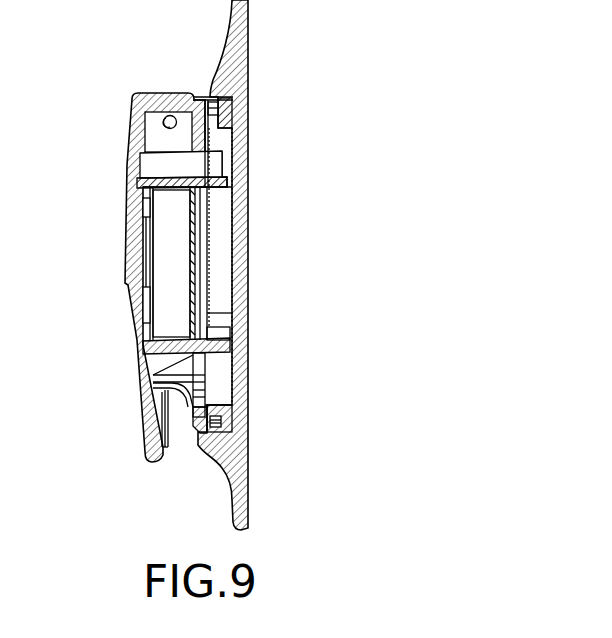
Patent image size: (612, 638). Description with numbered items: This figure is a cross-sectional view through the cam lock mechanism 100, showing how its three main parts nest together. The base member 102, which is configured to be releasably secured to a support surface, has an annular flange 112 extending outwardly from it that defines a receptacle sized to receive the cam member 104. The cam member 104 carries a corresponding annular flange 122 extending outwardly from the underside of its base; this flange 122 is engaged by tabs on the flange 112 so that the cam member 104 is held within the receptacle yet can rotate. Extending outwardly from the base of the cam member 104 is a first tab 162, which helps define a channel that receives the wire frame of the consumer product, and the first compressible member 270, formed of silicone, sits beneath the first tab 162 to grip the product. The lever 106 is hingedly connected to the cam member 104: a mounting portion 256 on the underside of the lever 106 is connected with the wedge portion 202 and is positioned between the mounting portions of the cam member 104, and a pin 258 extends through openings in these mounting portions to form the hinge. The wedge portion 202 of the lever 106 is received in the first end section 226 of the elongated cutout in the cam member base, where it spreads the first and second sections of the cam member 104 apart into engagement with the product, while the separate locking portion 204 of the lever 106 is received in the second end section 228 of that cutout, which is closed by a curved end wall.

The cam lock mechanism 100 is at (431, 100).
The base member 102 is at (243, 316).
The cam member 104 is at (202, 264).
The lever 106 is at (130, 310).
The annular flange 112 is at (209, 99).
The annular flange 122 is at (228, 417).
The first tab 162 is at (148, 237).
The wedge portion 202 is at (172, 168).
The locking portion 204 is at (150, 350).
The first end section 226 is at (203, 189).
The second end section 228 is at (202, 364).
The mounting portion 256 is at (157, 132).
The pin 258 is at (166, 116).
The first compressible member 270 is at (163, 264).